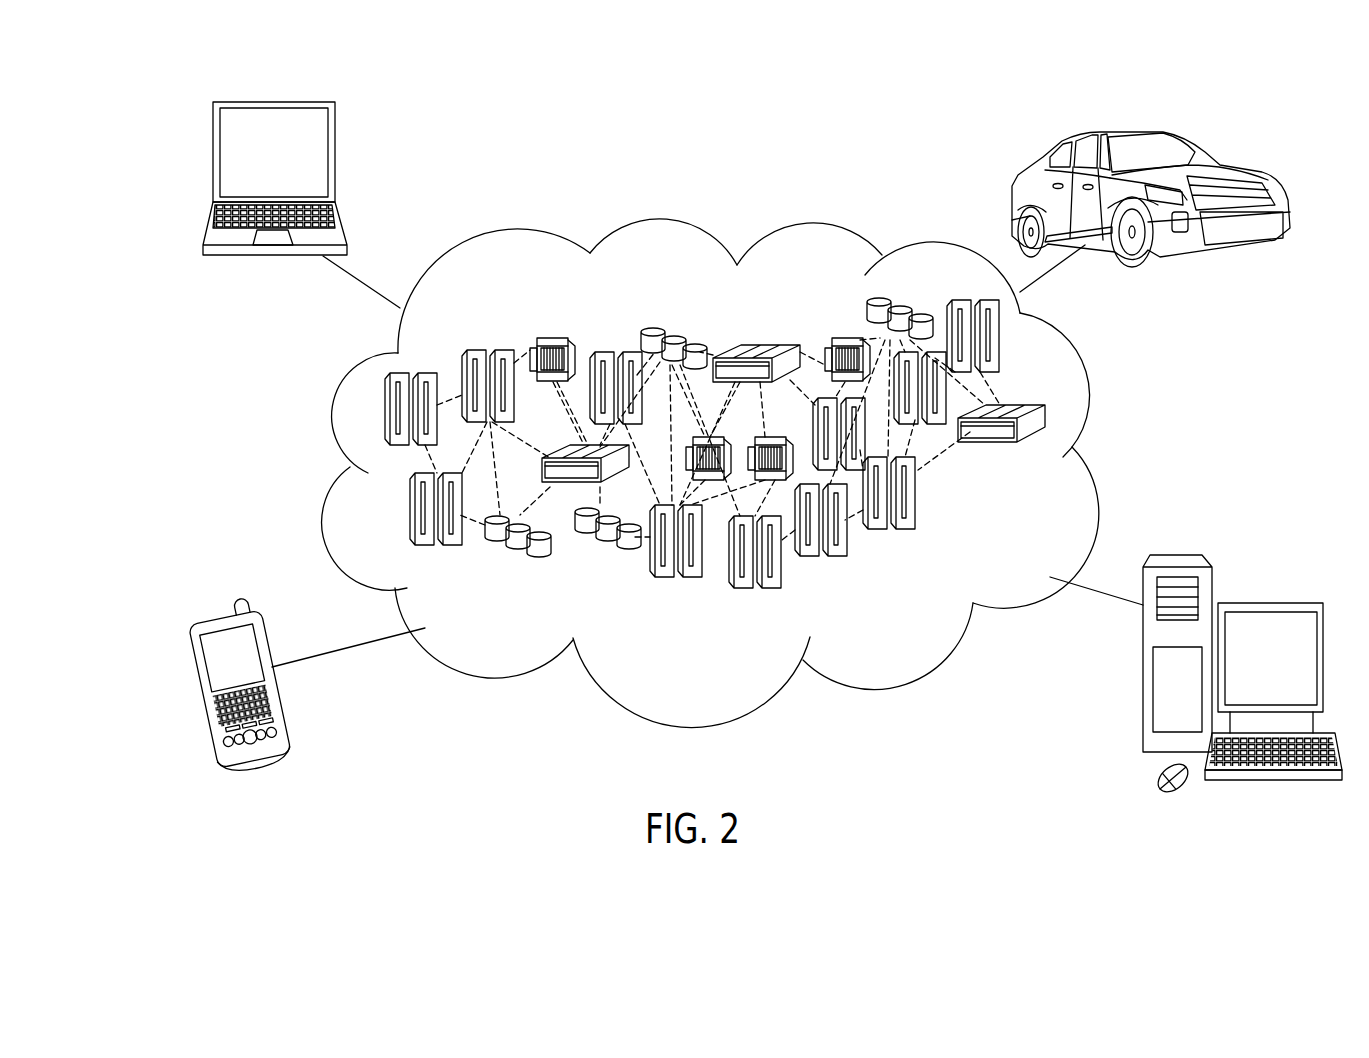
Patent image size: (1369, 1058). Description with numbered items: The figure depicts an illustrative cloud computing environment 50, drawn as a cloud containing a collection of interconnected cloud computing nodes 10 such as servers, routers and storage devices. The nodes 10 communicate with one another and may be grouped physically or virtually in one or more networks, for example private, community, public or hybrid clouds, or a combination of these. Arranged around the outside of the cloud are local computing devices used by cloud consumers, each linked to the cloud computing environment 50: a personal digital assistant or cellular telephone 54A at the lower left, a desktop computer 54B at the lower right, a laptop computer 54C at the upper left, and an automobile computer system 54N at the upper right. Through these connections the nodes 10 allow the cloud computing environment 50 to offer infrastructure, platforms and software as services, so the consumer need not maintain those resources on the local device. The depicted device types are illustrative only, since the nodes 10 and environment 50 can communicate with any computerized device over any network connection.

The cloud computing nodes 10 is at (1072, 471).
The cloud computing environment 50 is at (1086, 385).
The personal digital assistant or cellular telephone 54A is at (192, 690).
The desktop computer 54B is at (1265, 603).
The laptop computer 54C is at (212, 157).
The automobile computer system 54N is at (1202, 152).